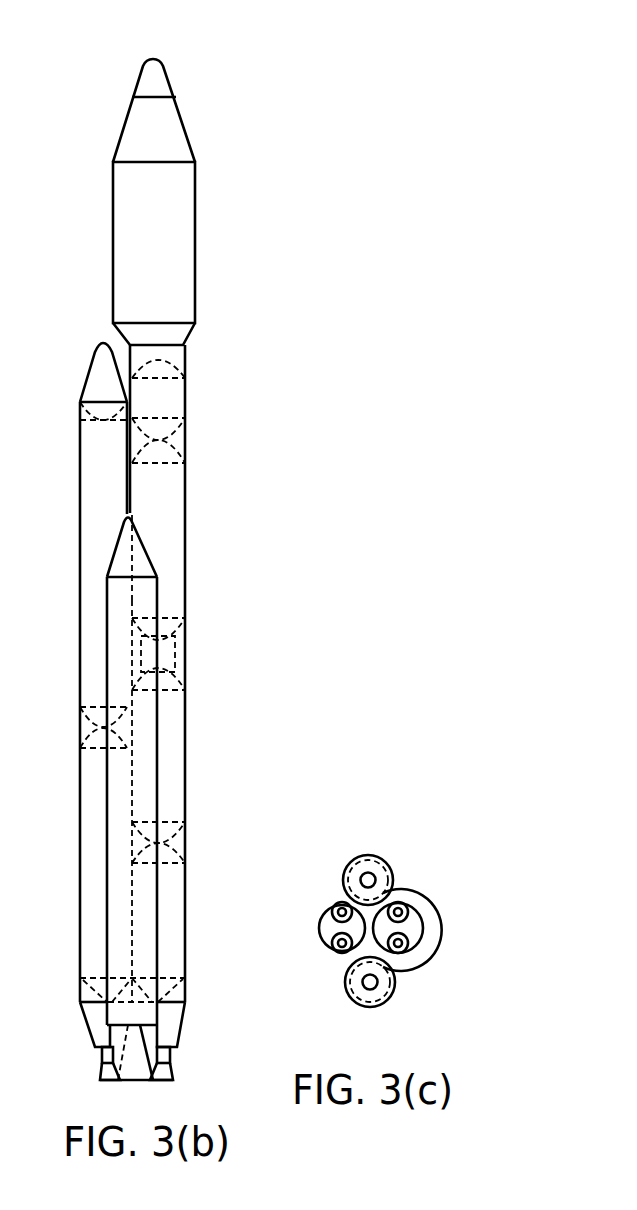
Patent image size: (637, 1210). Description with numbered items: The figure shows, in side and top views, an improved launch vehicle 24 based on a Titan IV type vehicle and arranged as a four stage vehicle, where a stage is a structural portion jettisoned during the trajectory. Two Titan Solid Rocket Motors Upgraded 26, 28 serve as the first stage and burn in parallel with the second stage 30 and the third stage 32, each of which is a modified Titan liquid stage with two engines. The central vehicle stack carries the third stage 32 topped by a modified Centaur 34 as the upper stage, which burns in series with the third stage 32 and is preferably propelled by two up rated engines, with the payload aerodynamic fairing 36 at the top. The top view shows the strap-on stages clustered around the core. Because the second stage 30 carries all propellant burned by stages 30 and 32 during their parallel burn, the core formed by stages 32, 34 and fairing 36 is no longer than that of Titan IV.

In FIG. 3B, the launch vehicle 24 is at (158, 52).
In FIG. 3B, the Solid Rocket Motor Upgraded 26 is at (143, 593).
In FIG. 3C, the Solid Rocket Motor Upgraded 26 is at (388, 997).
In FIG. 3C, the Solid Rocket Motor Upgraded 28 is at (367, 855).
In FIG. 3B, the second stage 30 is at (100, 480).
In FIG. 3C, the second stage 30 is at (320, 915).
In FIG. 3B, the third stage 32 is at (166, 773).
In FIG. 3C, the third stage 32 is at (412, 918).
In FIG. 3B, the modified Centaur 34 is at (178, 478).
In FIG. 3B, the payload aerodynamic fairing 36 is at (198, 258).
In FIG. 3C, the payload aerodynamic fairing 36 is at (440, 942).